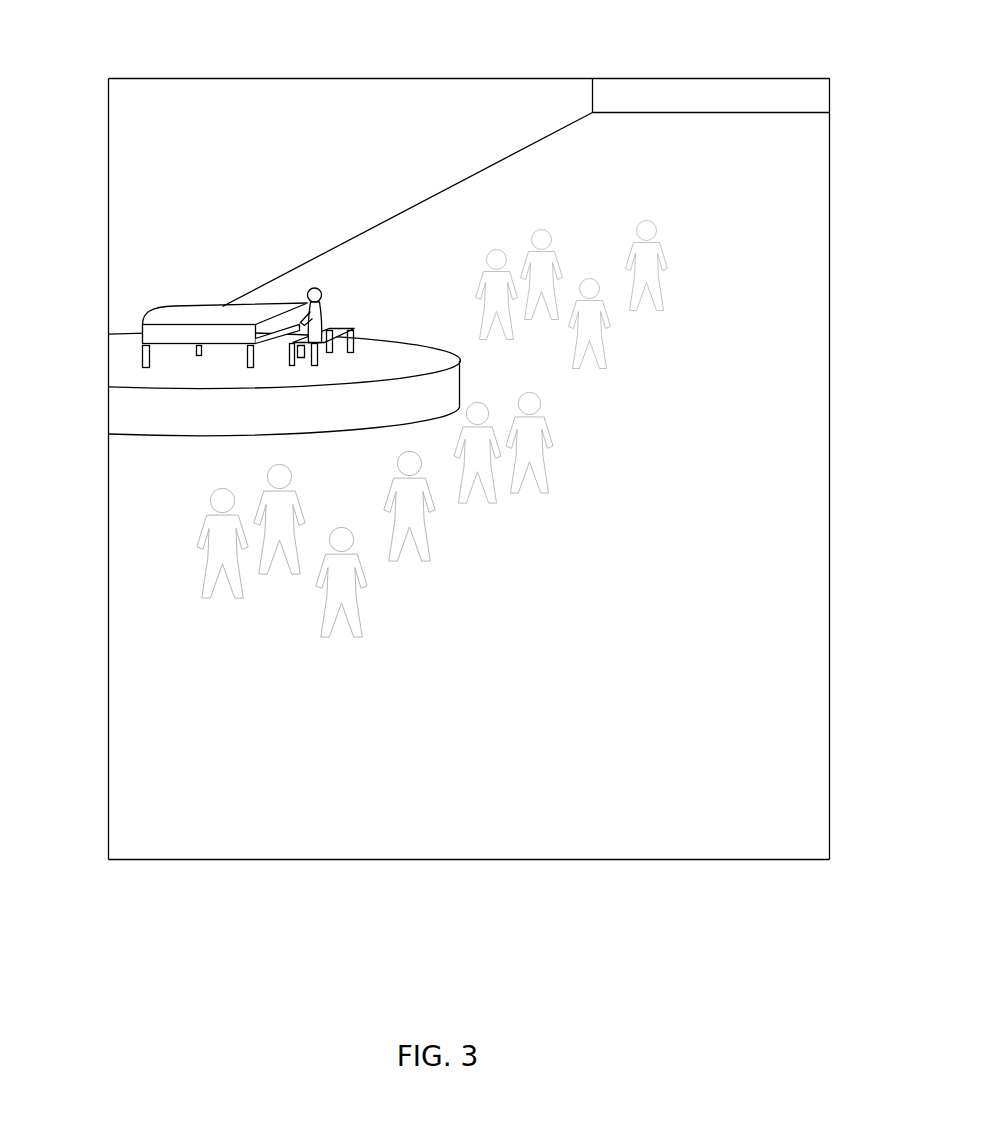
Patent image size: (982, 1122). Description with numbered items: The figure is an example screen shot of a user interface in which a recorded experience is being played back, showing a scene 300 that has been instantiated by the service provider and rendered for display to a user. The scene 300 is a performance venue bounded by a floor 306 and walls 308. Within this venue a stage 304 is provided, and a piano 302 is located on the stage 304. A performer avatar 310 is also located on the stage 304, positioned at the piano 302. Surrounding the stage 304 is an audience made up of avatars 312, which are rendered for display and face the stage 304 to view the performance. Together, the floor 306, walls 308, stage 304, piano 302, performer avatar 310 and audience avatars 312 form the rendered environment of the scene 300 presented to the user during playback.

The scene 300 is at (257, 878).
The piano 302 is at (155, 332).
The stage 304 is at (128, 412).
The floor 306 is at (722, 837).
The walls 308 is at (458, 88).
The performer avatar 310 is at (309, 290).
The avatars 312 is at (652, 270).